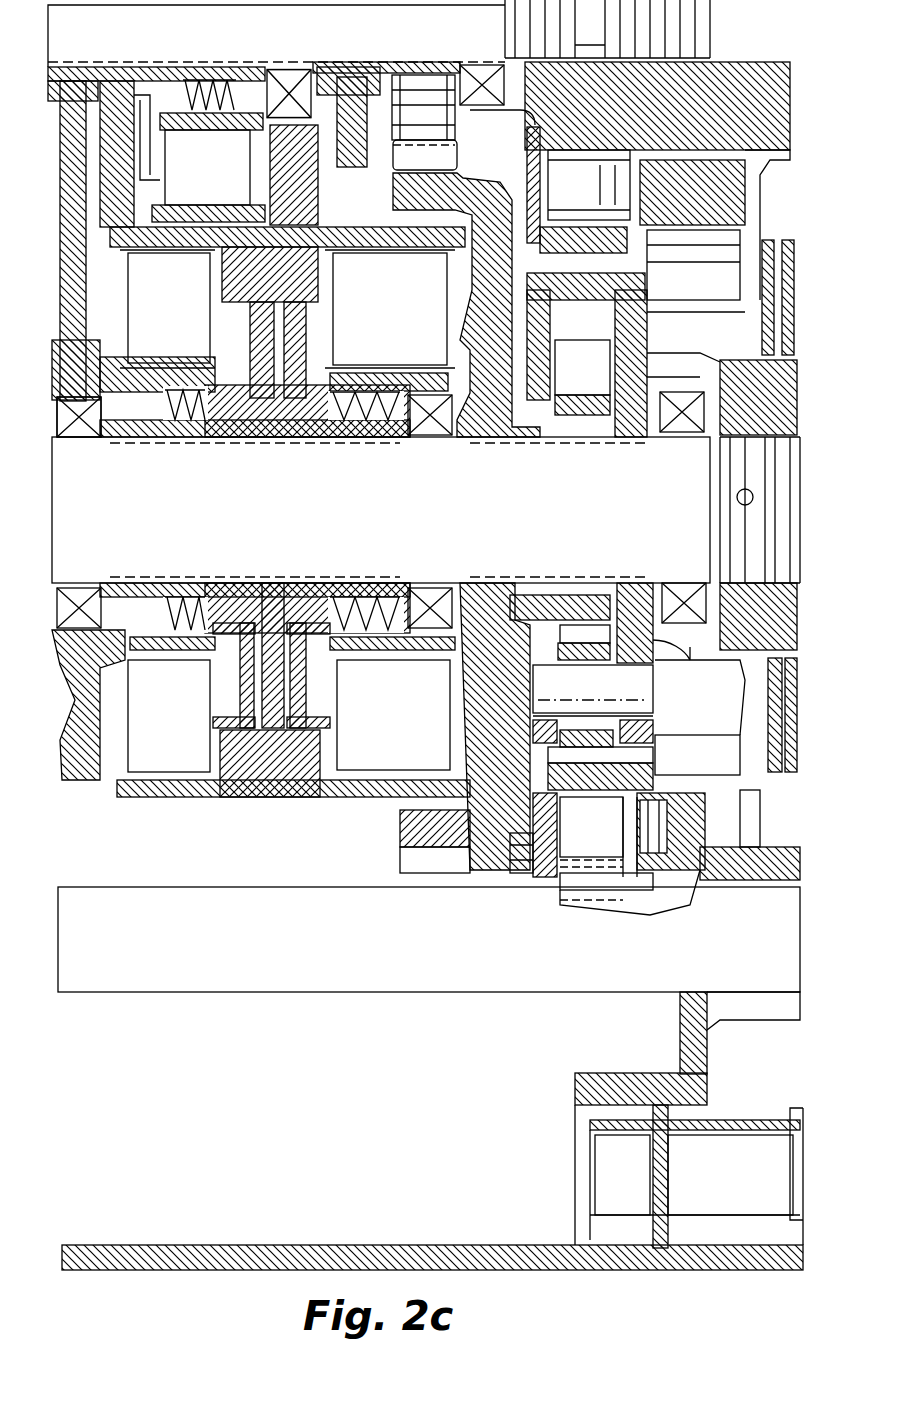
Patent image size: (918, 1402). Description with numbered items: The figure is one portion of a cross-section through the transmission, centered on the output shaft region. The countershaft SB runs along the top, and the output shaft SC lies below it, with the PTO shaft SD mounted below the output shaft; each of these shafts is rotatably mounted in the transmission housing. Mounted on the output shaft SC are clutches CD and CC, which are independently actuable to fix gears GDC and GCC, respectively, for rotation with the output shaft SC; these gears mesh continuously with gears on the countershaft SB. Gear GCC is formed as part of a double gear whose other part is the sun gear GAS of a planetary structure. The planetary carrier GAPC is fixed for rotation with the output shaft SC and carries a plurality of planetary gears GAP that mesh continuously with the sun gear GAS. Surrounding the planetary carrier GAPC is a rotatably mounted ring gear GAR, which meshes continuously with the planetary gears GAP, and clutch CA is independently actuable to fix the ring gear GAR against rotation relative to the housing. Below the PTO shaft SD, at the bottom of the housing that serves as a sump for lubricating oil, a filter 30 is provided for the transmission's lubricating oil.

The countershaft SB is at (330, 45).
The output shaft SC is at (385, 510).
The PTO shaft SD is at (352, 945).
The clutch CD is at (188, 308).
The clutch CC is at (406, 315).
The clutch CA is at (598, 205).
The gear GCC is at (470, 193).
The sun gear GAS is at (575, 385).
The planetary carrier GAPC is at (632, 400).
The gear GDC is at (85, 395).
The planetary gears GAP is at (660, 752).
The ring gear GAR is at (540, 800).
The filter 30 is at (520, 1150).